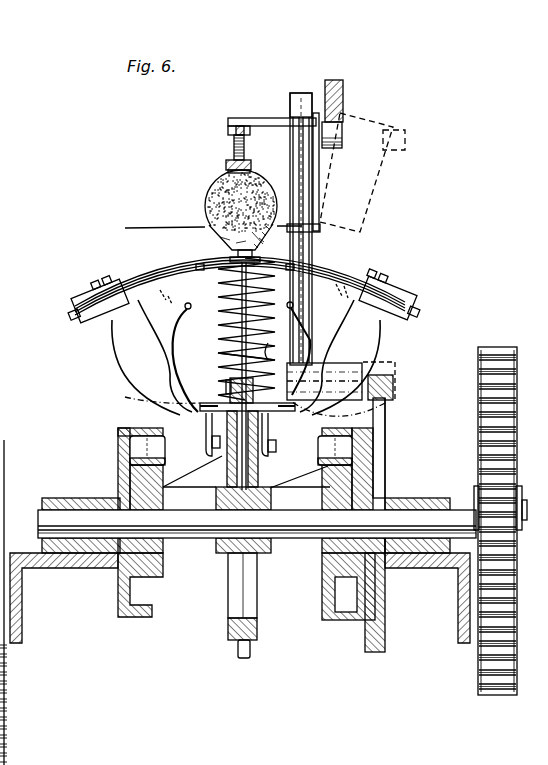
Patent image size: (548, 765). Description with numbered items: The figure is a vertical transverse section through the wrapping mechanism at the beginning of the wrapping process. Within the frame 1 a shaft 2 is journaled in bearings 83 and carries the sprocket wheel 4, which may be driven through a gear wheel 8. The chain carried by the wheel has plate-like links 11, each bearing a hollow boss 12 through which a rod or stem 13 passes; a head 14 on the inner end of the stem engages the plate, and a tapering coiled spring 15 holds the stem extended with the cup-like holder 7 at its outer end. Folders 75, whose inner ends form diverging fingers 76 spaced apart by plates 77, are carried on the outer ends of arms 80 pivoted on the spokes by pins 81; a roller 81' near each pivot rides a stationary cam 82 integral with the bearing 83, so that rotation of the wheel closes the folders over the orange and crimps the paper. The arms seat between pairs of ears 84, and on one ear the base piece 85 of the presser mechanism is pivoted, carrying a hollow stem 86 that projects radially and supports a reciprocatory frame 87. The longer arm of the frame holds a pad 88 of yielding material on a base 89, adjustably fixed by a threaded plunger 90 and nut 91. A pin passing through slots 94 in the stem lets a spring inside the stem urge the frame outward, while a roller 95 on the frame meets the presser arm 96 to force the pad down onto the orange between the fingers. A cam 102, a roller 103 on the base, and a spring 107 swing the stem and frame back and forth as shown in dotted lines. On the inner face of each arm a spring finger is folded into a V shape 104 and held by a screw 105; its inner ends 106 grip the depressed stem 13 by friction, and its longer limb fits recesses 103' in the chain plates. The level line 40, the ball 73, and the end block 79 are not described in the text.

The frame 1 is at (60, 568).
The shaft 2 is at (40, 530).
The sprocket wheel 4 is at (259, 593).
The cup-like holder 7 is at (232, 242).
The gear wheel 8 is at (498, 347).
The plate-like link 11 is at (385, 433).
The boss 12 is at (252, 322).
The rod or stem 13 is at (222, 357).
The head 14 is at (165, 419).
The coiled spring 15 is at (222, 324).
The level line 40 is at (157, 227).
The ball float 73 is at (212, 200).
The folders 75 is at (151, 284).
The diverging fingers 76 is at (200, 265).
The spacing plates 77 is at (358, 266).
The end block 79 is at (112, 288).
The arm 80 is at (127, 364).
The pin 81 is at (263, 482).
The roller 81' is at (276, 448).
The cam 82 is at (120, 482).
The bearing 83 is at (47, 498).
The ears 84 is at (226, 392).
The base piece 85 is at (276, 356).
The hollow post or stem 86 is at (300, 238).
The reciprocatory frame 87 is at (268, 117).
The pad 88 is at (226, 172).
The base 89 is at (227, 160).
The screw threaded stem or plunger 90 is at (245, 146).
The nut 91 is at (229, 130).
The slots 94 is at (296, 198).
The roller 95 is at (333, 150).
The presser arm 96 is at (344, 88).
The cam 102 is at (386, 462).
The roller 103 is at (310, 357).
The recesses 103' is at (277, 402).
The V-shaped folded portion 104 is at (205, 486).
The screw 105 is at (208, 445).
The inner ends of spring fingers 106 is at (228, 404).
The spring 107 is at (255, 385).